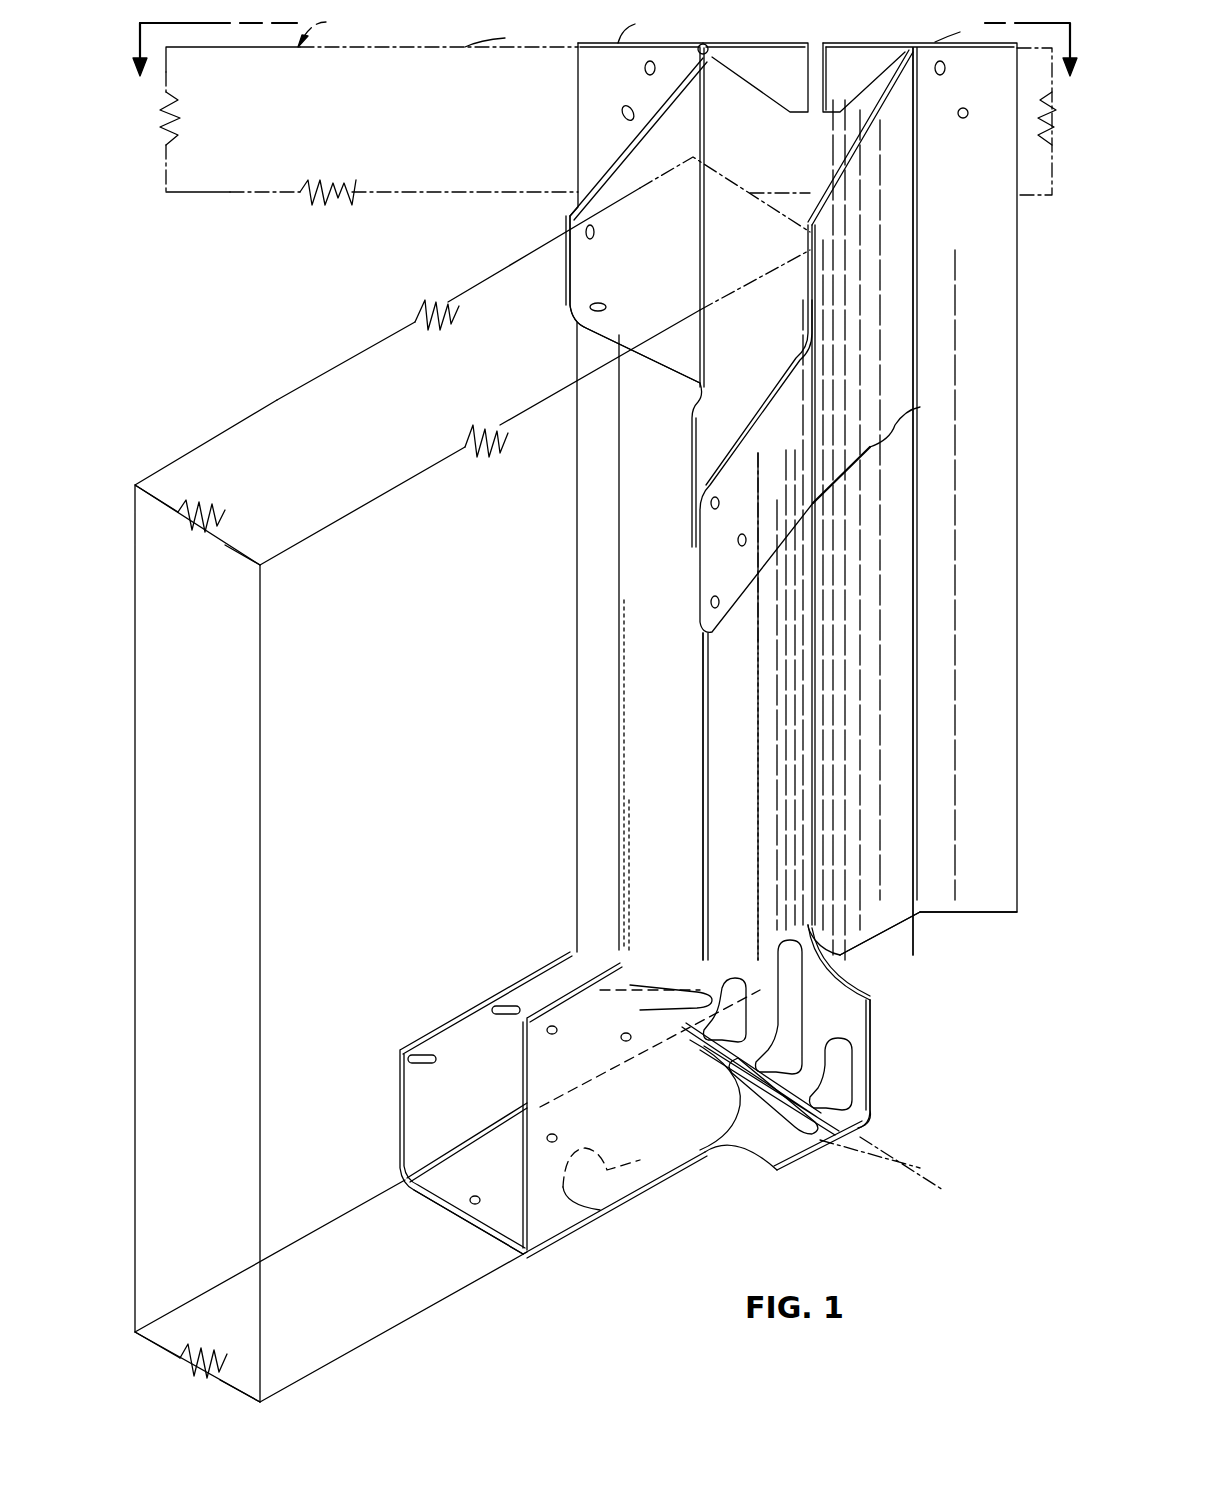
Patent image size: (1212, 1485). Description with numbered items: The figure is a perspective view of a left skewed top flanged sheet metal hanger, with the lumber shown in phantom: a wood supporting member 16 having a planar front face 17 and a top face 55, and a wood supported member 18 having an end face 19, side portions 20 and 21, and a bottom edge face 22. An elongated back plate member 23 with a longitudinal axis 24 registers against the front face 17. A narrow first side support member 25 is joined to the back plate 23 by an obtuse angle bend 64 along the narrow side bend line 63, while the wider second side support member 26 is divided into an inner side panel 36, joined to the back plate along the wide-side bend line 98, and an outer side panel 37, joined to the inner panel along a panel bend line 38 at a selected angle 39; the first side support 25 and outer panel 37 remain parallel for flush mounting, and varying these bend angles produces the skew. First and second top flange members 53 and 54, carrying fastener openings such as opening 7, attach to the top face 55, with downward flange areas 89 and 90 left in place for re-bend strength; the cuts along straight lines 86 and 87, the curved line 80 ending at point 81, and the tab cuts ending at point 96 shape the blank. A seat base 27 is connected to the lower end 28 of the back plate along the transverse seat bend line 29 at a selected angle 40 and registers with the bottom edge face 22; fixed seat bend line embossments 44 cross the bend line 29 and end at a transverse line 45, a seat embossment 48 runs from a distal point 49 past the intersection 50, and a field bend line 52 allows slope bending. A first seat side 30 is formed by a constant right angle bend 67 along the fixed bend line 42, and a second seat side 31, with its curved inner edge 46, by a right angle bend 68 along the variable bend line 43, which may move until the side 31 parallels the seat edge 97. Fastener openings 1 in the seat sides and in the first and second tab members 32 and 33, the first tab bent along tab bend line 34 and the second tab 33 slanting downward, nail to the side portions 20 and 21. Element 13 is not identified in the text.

The fastener openings 1 is at (596, 232).
The fastener opening 7 is at (603, 71).
The holes 13 is at (668, 68).
The wood supporting member 16 is at (333, 28).
The front face 17 is at (405, 125).
The wood supported member 18 is at (340, 362).
The end face 19 is at (742, 205).
The side portion 20 is at (135, 485).
The side portion 21 is at (414, 627).
The bottom edge face 22 is at (135, 1335).
The back plate member 23 is at (765, 804).
The longitudinal axis 24 is at (758, 665).
The first side support member 25 is at (578, 706).
The second side support member 26 is at (1017, 566).
The seat base 27 is at (442, 1188).
The end of back plate 28 is at (722, 965).
The seat bend line 29 is at (872, 1110).
The first seat side 30 is at (398, 1100).
The second seat side 31 is at (525, 1085).
The first tab member 32 is at (568, 286).
The second tab member 33 is at (698, 594).
The first tab bend line 34 is at (705, 240).
The inner side panel 36 is at (890, 950).
The outer side panel 37 is at (985, 913).
The panel bend line 38 is at (944, 790).
The selected angle 39 is at (893, 926).
The selected angle 40 is at (853, 1118).
The first fixed seat side bend line 42 is at (452, 1140).
The second variable seat side bend line 43 is at (608, 1212).
The fixed seat bend line embossments 44 is at (724, 1000).
The selected transverse line 45 is at (936, 1165).
The inner edge 46 is at (727, 1150).
The seat embossment 48 is at (612, 1135).
The distal point 49 is at (578, 1160).
The intersection 50 is at (702, 1170).
The field bend line 52 is at (930, 1180).
The first top flange member 53 is at (643, 25).
The second top flange member 54 is at (959, 22).
The top face 55 is at (502, 32).
The narrow side bend line 63 is at (703, 792).
The obtuse angle bend 64 is at (725, 872).
The constant right angle bend 67 is at (408, 1168).
The right angle bend 68 is at (527, 1236).
The curved line 80 is at (838, 976).
The point 81 is at (815, 928).
The straight line 86 is at (618, 172).
The straight line 87 is at (832, 172).
The downward flange area 89 is at (790, 82).
The downward flange area 90 is at (862, 82).
The point 96 is at (879, 441).
The seat edge 97 is at (805, 1170).
The wide-side bend line 98 is at (818, 772).